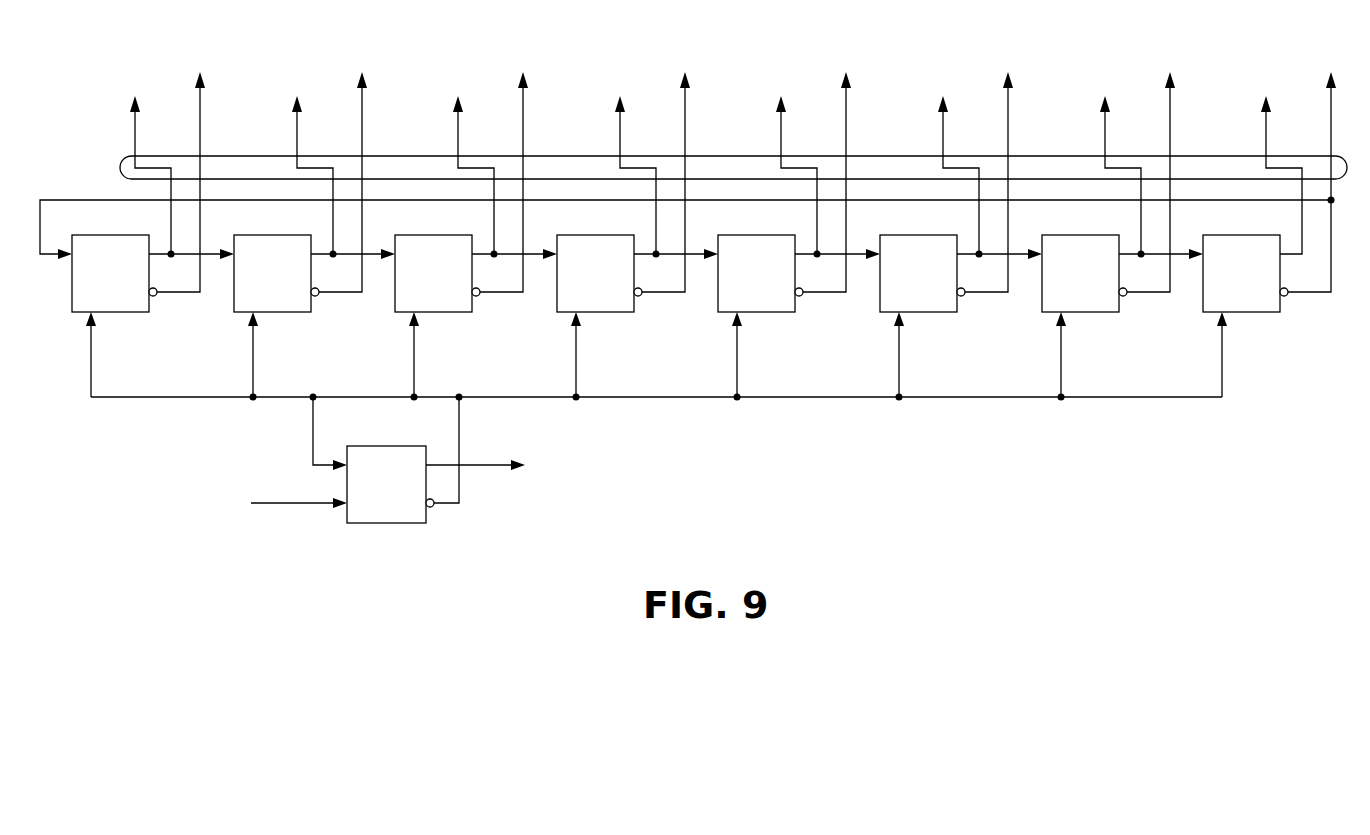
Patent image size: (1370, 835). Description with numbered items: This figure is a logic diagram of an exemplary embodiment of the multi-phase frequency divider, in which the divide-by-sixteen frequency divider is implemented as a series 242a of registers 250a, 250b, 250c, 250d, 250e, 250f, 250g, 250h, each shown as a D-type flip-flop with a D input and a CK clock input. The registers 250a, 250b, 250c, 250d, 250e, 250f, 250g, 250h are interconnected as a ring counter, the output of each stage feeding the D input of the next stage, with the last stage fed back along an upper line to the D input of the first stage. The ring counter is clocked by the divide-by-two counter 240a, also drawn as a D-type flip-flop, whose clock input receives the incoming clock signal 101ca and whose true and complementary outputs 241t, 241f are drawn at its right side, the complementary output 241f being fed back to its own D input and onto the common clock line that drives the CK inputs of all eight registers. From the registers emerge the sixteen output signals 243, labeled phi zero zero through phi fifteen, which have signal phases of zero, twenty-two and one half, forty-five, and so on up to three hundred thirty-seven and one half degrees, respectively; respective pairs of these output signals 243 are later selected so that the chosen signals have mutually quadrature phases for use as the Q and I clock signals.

The output signals 243 is at (118, 168).
The series of registers 242a is at (874, 486).
The register 250a is at (128, 312).
The register 250b is at (290, 312).
The register 250c is at (451, 312).
The register 250d is at (613, 312).
The register 250e is at (774, 312).
The register 250f is at (936, 312).
The register 250g is at (1098, 312).
The register 250h is at (1259, 312).
The divide-by-two counter 240a is at (397, 523).
The clock signal 101ca is at (292, 502).
The true clock output 241t is at (490, 465).
The complementary clock output 241f is at (462, 493).